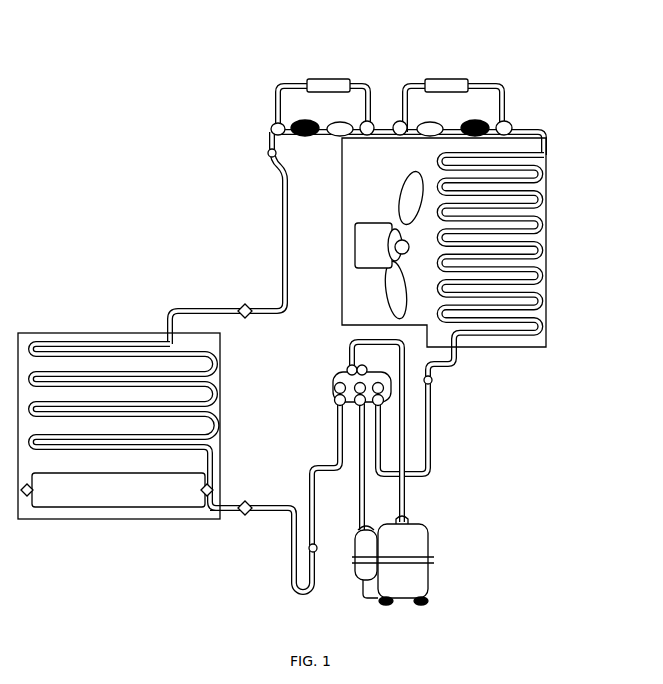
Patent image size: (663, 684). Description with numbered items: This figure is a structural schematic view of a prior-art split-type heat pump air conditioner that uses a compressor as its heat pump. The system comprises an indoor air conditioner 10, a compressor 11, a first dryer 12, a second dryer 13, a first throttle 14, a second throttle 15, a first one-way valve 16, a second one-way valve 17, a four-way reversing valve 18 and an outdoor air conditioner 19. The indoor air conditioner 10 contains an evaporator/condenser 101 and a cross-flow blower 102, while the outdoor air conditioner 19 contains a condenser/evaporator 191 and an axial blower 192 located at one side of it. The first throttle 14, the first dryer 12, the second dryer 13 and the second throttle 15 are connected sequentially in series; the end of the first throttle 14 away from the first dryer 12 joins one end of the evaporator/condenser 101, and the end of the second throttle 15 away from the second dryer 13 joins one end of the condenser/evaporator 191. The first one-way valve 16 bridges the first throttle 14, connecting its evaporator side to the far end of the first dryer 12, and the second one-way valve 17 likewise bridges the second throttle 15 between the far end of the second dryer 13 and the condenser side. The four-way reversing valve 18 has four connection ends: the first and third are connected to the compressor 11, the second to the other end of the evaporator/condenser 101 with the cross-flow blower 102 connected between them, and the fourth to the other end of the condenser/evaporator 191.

The indoor air conditioner 10 is at (223, 460).
The evaporator/condenser 101 is at (192, 418).
The cross-flow blower 102 is at (98, 495).
The compressor 11 is at (413, 575).
The first dryer 12 is at (337, 130).
The second dryer 13 is at (425, 123).
The first throttle 14 is at (314, 126).
The second throttle 15 is at (472, 127).
The first one-way valve 16 is at (322, 80).
The second one-way valve 17 is at (443, 80).
The four-way reversing valve 18 is at (327, 387).
The outdoor air conditioner 19 is at (547, 198).
The condenser/evaporator 191 is at (522, 237).
The axial blower 192 is at (382, 243).